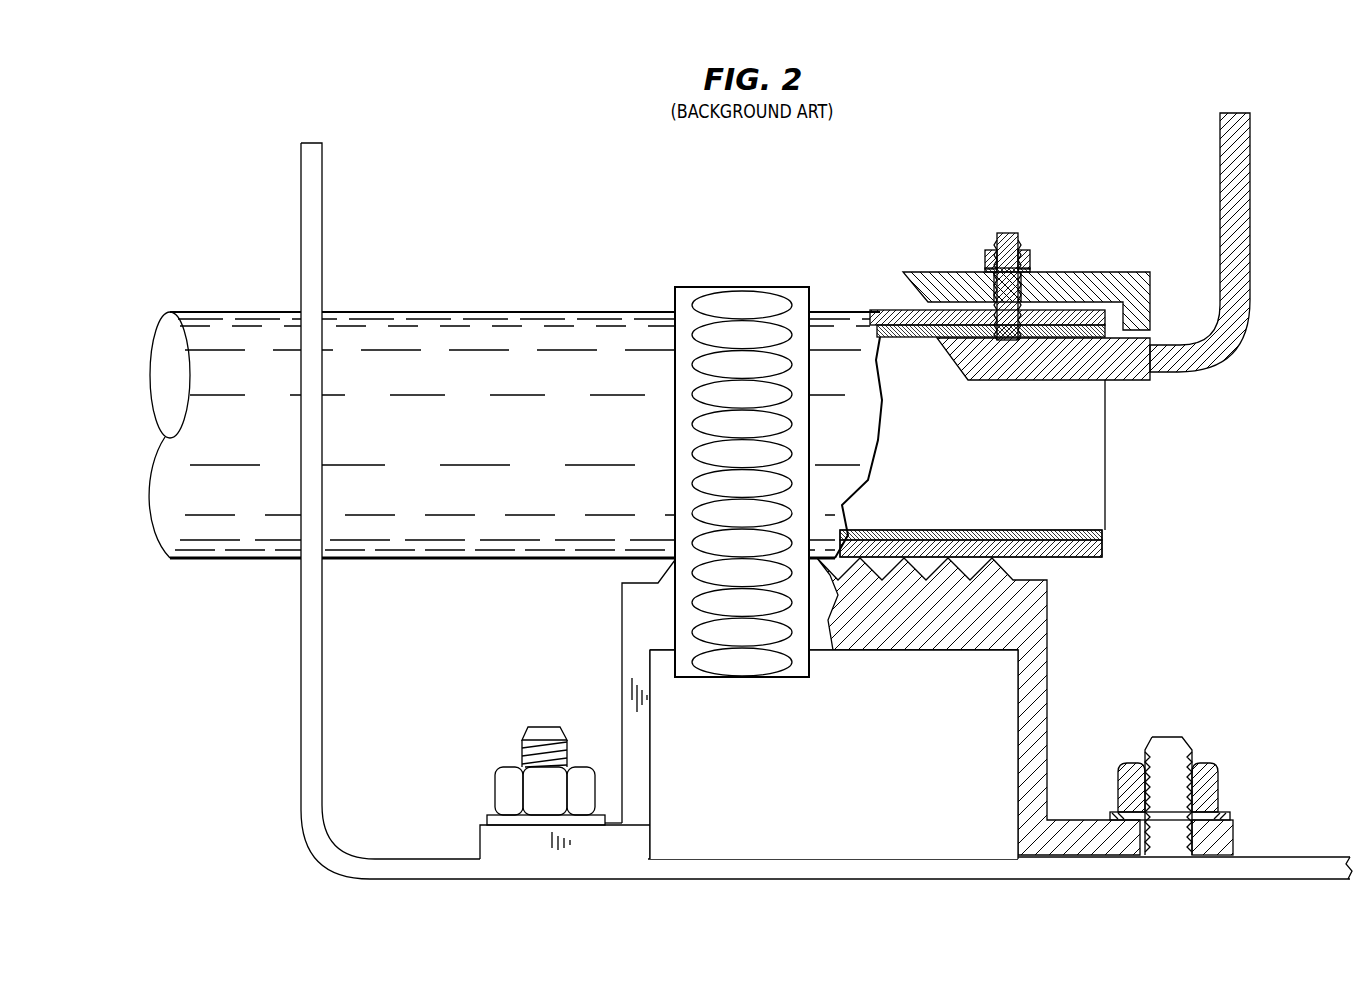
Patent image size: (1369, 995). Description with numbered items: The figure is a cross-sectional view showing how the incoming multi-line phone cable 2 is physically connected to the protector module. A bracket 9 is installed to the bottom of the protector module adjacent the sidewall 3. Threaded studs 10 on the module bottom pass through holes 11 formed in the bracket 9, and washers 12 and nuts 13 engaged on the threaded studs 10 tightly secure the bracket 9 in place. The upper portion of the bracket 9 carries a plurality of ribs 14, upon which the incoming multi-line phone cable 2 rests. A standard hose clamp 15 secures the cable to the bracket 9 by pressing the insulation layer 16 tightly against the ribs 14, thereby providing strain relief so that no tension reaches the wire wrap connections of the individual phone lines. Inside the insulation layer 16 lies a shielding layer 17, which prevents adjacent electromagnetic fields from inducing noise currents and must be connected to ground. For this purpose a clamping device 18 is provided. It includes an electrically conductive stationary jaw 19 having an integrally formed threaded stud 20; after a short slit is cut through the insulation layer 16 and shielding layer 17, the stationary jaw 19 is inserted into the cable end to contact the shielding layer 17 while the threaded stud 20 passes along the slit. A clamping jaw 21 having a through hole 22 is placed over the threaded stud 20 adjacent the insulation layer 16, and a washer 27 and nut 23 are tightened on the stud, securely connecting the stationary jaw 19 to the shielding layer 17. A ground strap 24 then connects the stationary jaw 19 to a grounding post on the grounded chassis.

The incoming multi-line phone cable 2 is at (196, 312).
The sidewall 3 is at (322, 645).
The bracket 9 is at (622, 615).
The threaded studs 10 is at (530, 727).
The holes 11 is at (1122, 858).
The washers 12 is at (487, 818).
The nuts 13 is at (495, 790).
The ribs 14 is at (925, 530).
The hose clamp 15 is at (700, 287).
The insulation layer 16 is at (890, 312).
The shielding layer 17 is at (900, 338).
The clamping device 18 is at (1036, 278).
The stationary jaw 19 is at (1140, 365).
The threaded stud 20 is at (1000, 232).
The clamping jaw 21 is at (1126, 272).
The through hole 22 is at (1025, 292).
The nut 23 is at (1029, 262).
The ground strap 24 is at (1252, 246).
The washer 27 is at (1032, 268).